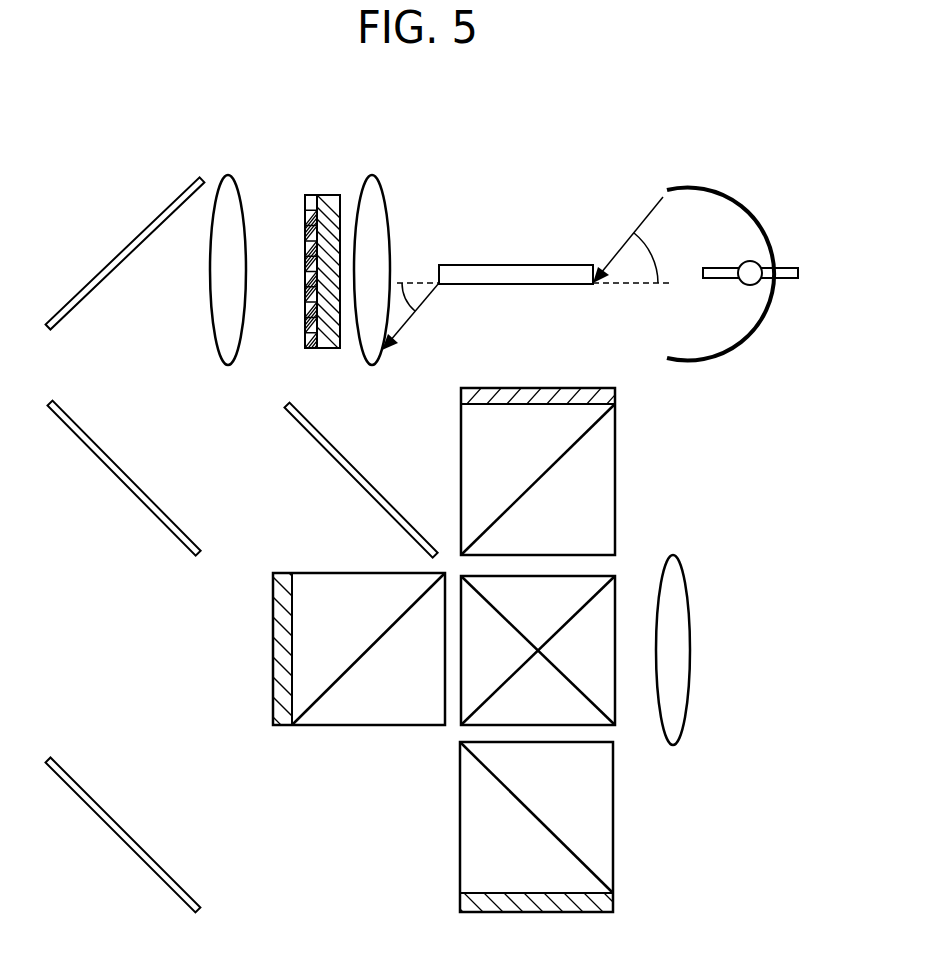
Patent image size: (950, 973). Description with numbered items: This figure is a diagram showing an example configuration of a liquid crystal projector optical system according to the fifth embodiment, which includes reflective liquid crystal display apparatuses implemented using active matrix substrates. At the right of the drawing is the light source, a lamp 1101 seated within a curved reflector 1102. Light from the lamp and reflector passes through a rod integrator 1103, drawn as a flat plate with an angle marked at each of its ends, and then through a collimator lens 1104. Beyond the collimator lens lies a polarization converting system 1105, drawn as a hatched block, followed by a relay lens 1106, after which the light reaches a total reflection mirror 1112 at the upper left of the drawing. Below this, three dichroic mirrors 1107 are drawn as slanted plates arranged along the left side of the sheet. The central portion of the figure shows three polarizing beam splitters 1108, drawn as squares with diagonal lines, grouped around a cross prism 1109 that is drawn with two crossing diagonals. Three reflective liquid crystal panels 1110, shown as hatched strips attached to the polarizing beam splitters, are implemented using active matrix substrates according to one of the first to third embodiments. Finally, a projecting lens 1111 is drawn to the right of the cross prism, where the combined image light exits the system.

The lamp (light source) 1101 is at (752, 287).
The reflector 1102 is at (758, 215).
The rod integrator 1103 is at (543, 260).
The collimator lens 1104 is at (377, 207).
The polarization converting system 1105 is at (323, 198).
The relay lens 1106 is at (232, 195).
The dichroic mirror 1107 is at (120, 477).
The polarizing beam splitter 1108 is at (595, 478).
The cross prism 1109 is at (593, 574).
The reflective liquid crystal panel 1110 is at (542, 393).
The projecting lens 1111 is at (683, 637).
The total reflection mirror 1112 is at (125, 252).